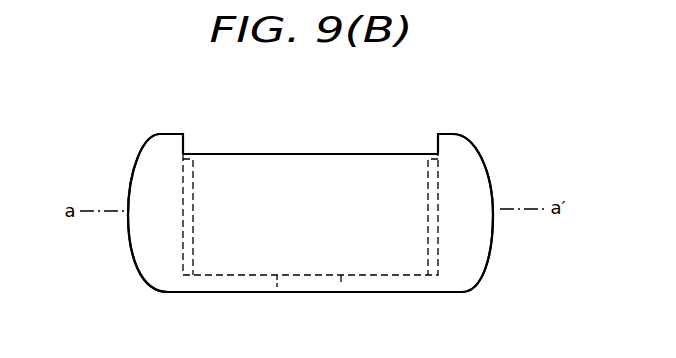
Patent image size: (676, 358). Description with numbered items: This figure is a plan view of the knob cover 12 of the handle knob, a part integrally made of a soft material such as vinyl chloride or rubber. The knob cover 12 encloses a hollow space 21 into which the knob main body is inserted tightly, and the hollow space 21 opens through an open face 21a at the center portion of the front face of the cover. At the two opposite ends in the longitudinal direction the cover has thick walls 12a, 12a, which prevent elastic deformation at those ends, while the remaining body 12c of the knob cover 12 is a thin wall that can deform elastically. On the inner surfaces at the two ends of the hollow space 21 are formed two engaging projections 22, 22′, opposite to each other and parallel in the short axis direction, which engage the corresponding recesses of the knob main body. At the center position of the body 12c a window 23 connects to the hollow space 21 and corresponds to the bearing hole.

The knob cover 12 is at (384, 144).
The thick wall ends 12a is at (137, 177).
The body of the knob cover 12c is at (398, 283).
The hollow space 21 is at (222, 275).
The open face 21a is at (270, 154).
The engaging projection 22 is at (193, 180).
The engaging projection 22′ is at (428, 182).
The window 23 is at (341, 282).